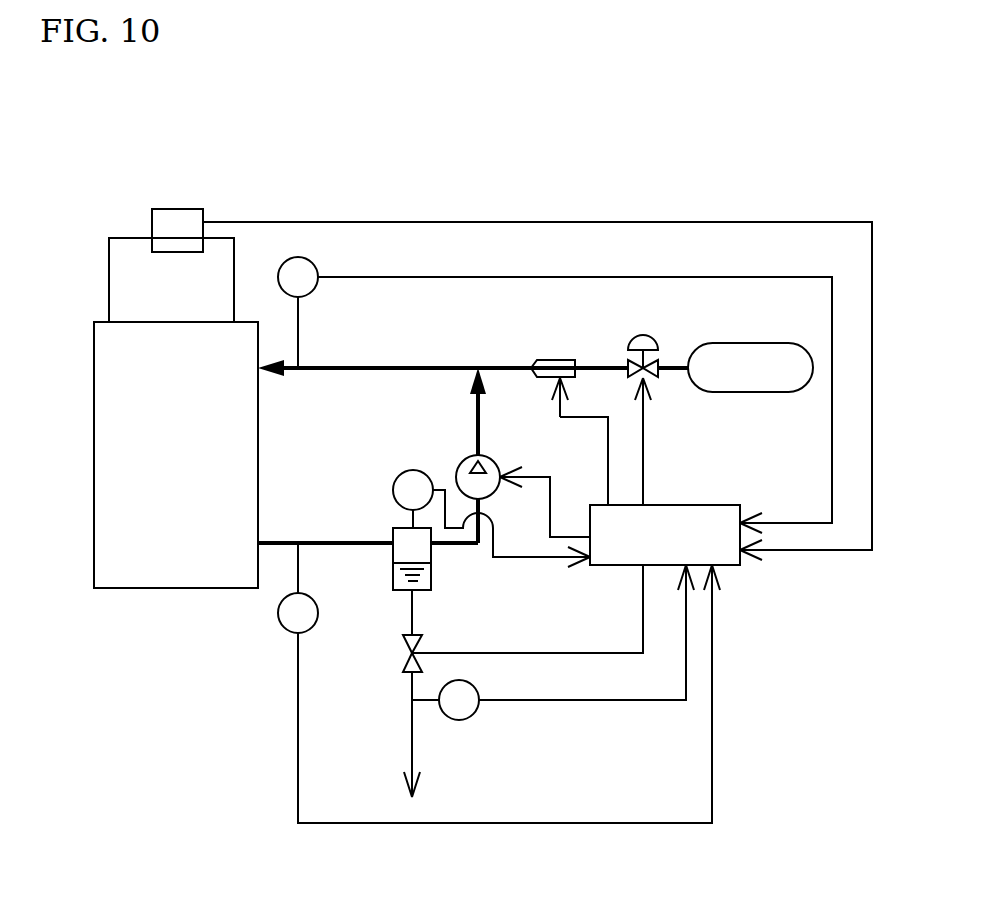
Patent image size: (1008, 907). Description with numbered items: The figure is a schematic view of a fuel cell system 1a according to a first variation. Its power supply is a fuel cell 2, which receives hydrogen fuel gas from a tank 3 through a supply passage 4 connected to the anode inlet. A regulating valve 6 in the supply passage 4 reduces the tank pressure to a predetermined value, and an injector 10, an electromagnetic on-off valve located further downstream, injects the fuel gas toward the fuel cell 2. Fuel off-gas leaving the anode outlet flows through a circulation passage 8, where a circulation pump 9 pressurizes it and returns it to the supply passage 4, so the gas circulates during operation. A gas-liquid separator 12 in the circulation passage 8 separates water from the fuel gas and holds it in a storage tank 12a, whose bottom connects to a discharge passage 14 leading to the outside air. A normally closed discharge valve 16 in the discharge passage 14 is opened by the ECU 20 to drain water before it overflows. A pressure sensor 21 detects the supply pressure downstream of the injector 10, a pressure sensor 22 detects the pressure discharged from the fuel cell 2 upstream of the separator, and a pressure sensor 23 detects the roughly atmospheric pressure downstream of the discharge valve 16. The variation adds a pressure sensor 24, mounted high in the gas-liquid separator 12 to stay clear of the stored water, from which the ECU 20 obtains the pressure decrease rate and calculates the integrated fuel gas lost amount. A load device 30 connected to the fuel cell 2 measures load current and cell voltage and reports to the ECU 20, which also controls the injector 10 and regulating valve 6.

The fuel cell system 1a is at (618, 184).
The fuel cell 2 is at (258, 420).
The tank 3 is at (742, 345).
The supply passage 4 is at (376, 366).
The regulating valve 6 is at (660, 334).
The circulation passage 8 is at (480, 408).
The circulation pump 9 is at (494, 462).
The injector 10 is at (555, 359).
The gas-liquid separator 12 is at (395, 528).
The storage tank 12a is at (393, 578).
The discharge passage 14 is at (412, 621).
The discharge valve 16 is at (402, 660).
The ECU 20 is at (710, 505).
The pressure sensor 21 is at (318, 272).
The pressure sensor 22 is at (280, 608).
The pressure sensor 23 is at (472, 716).
The pressure sensor 24 is at (402, 470).
The load device 30 is at (192, 209).